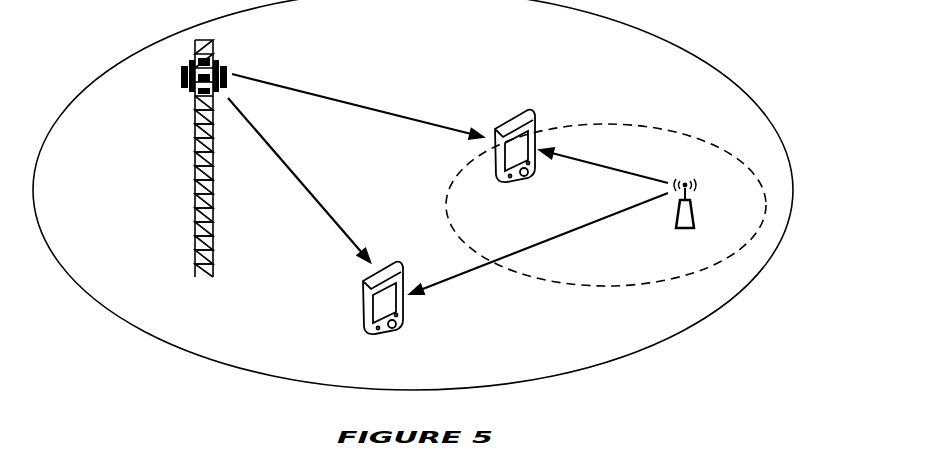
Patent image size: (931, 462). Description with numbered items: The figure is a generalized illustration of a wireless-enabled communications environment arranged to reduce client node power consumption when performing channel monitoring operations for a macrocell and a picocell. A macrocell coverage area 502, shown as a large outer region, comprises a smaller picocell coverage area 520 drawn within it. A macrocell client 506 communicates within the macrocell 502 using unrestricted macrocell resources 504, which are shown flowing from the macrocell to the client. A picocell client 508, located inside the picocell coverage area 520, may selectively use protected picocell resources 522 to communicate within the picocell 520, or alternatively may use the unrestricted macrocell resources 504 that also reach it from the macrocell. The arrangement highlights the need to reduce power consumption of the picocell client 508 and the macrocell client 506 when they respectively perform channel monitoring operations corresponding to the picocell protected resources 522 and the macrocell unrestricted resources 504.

The macrocell coverage area 502 is at (392, 53).
The unrestricted macrocell resources 504 is at (278, 86).
The macrocell client 506 is at (401, 312).
The picocell client 508 is at (518, 112).
The picocell coverage area 520 is at (624, 275).
The protected picocell resources 522 is at (612, 172).